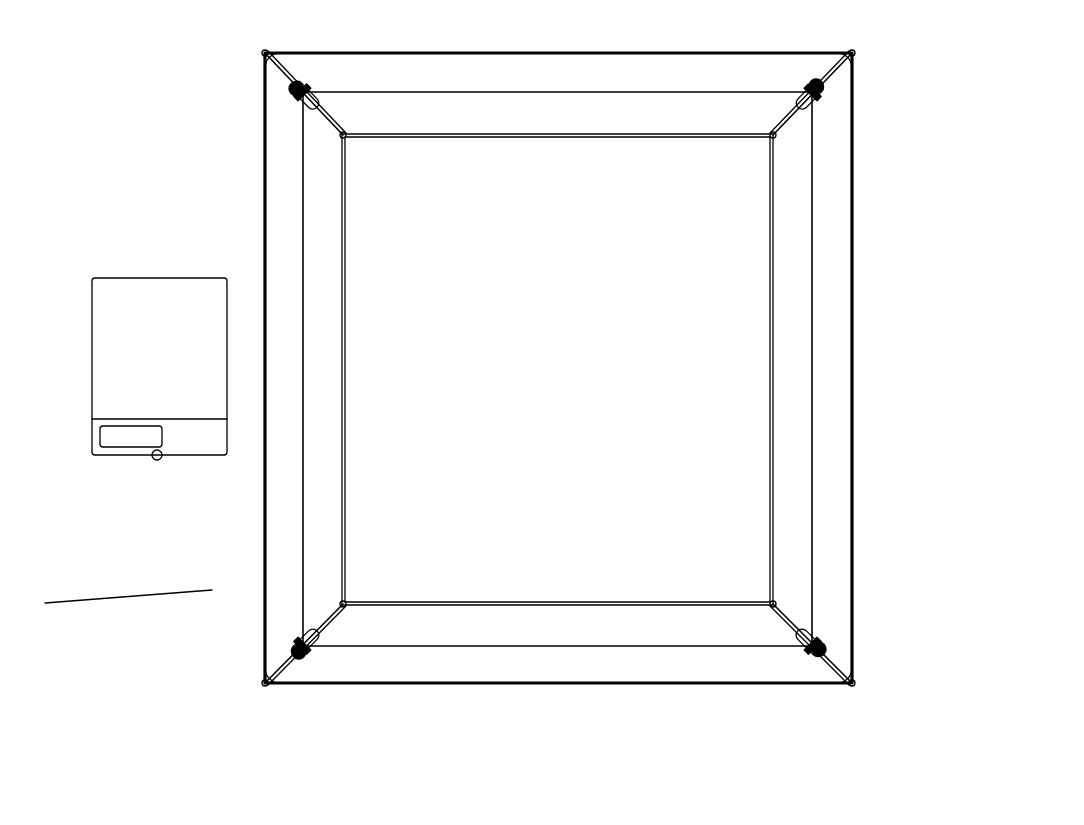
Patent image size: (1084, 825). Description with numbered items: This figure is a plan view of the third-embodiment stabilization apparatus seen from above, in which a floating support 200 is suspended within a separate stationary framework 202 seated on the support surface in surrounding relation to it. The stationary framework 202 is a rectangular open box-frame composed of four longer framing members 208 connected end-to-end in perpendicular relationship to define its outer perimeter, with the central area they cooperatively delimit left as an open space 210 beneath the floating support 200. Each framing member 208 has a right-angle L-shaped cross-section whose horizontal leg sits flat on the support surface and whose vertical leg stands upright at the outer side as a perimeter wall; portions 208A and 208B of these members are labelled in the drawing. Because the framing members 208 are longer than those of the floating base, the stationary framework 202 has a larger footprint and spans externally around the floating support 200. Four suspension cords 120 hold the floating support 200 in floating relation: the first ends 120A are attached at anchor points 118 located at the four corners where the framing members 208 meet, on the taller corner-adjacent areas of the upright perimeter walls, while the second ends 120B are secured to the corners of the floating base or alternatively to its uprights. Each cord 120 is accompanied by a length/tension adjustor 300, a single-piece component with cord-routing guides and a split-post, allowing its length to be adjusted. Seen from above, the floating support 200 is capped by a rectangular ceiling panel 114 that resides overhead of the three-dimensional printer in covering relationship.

The ceiling panel 114 is at (576, 366).
The anchor points 118 is at (262, 56).
The suspension cords 120 is at (288, 68).
The first ends 120A is at (265, 50).
The second ends 120B is at (346, 133).
The floating support 200 is at (768, 435).
The stationary framework 202 is at (246, 215).
The framing members 208 is at (662, 74).
The frame member first portion 208A is at (560, 72).
The frame member second portion 208B is at (482, 52).
The open space 210 is at (688, 624).
The length/tension adjustor 300 is at (295, 110).